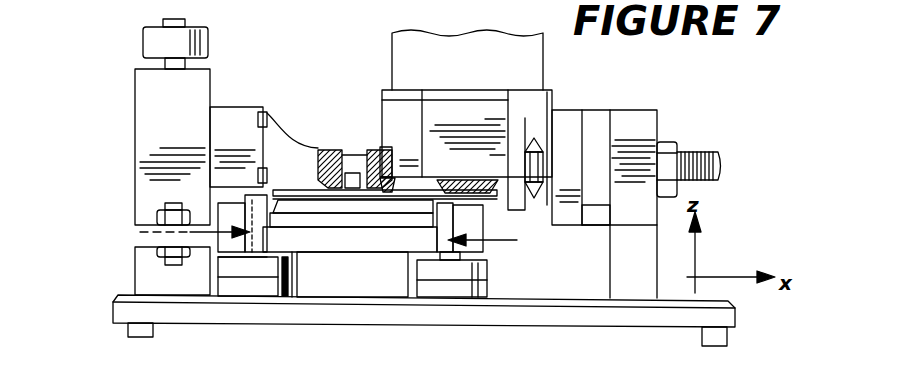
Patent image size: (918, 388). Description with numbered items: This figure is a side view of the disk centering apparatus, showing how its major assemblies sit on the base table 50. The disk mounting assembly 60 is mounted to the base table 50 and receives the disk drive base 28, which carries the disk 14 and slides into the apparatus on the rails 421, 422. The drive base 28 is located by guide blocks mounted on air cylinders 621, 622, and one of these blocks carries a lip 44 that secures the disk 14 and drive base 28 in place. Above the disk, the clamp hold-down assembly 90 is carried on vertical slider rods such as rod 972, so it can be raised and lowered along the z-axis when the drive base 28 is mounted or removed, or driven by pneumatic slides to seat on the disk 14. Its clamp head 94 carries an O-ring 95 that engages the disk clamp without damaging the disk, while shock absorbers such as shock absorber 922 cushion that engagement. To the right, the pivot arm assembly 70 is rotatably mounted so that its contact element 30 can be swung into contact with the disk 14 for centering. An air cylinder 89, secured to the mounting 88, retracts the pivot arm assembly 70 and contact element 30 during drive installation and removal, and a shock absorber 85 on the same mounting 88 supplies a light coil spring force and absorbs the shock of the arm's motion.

The base table 50 is at (630, 330).
The clamp hold-down assembly 90 is at (135, 107).
The vertical slider rod 972 is at (167, 67).
The shock absorber 922 is at (168, 207).
The rail 421 is at (140, 237).
The rail 422 is at (501, 235).
The air cylinder 622 is at (240, 288).
The air cylinder 621 is at (445, 290).
The lip 44 is at (284, 257).
The disk mounting assembly 60 is at (372, 288).
The disk drive base 28 is at (313, 207).
The disk 14 is at (425, 190).
The clamp head 94 is at (353, 173).
The O-ring 95 is at (316, 186).
The pivot arm assembly 70 is at (485, 80).
The contact element 30 is at (500, 180).
The mounting 88 is at (643, 123).
The air cylinder 89 is at (593, 218).
The shock absorber 85 is at (713, 160).